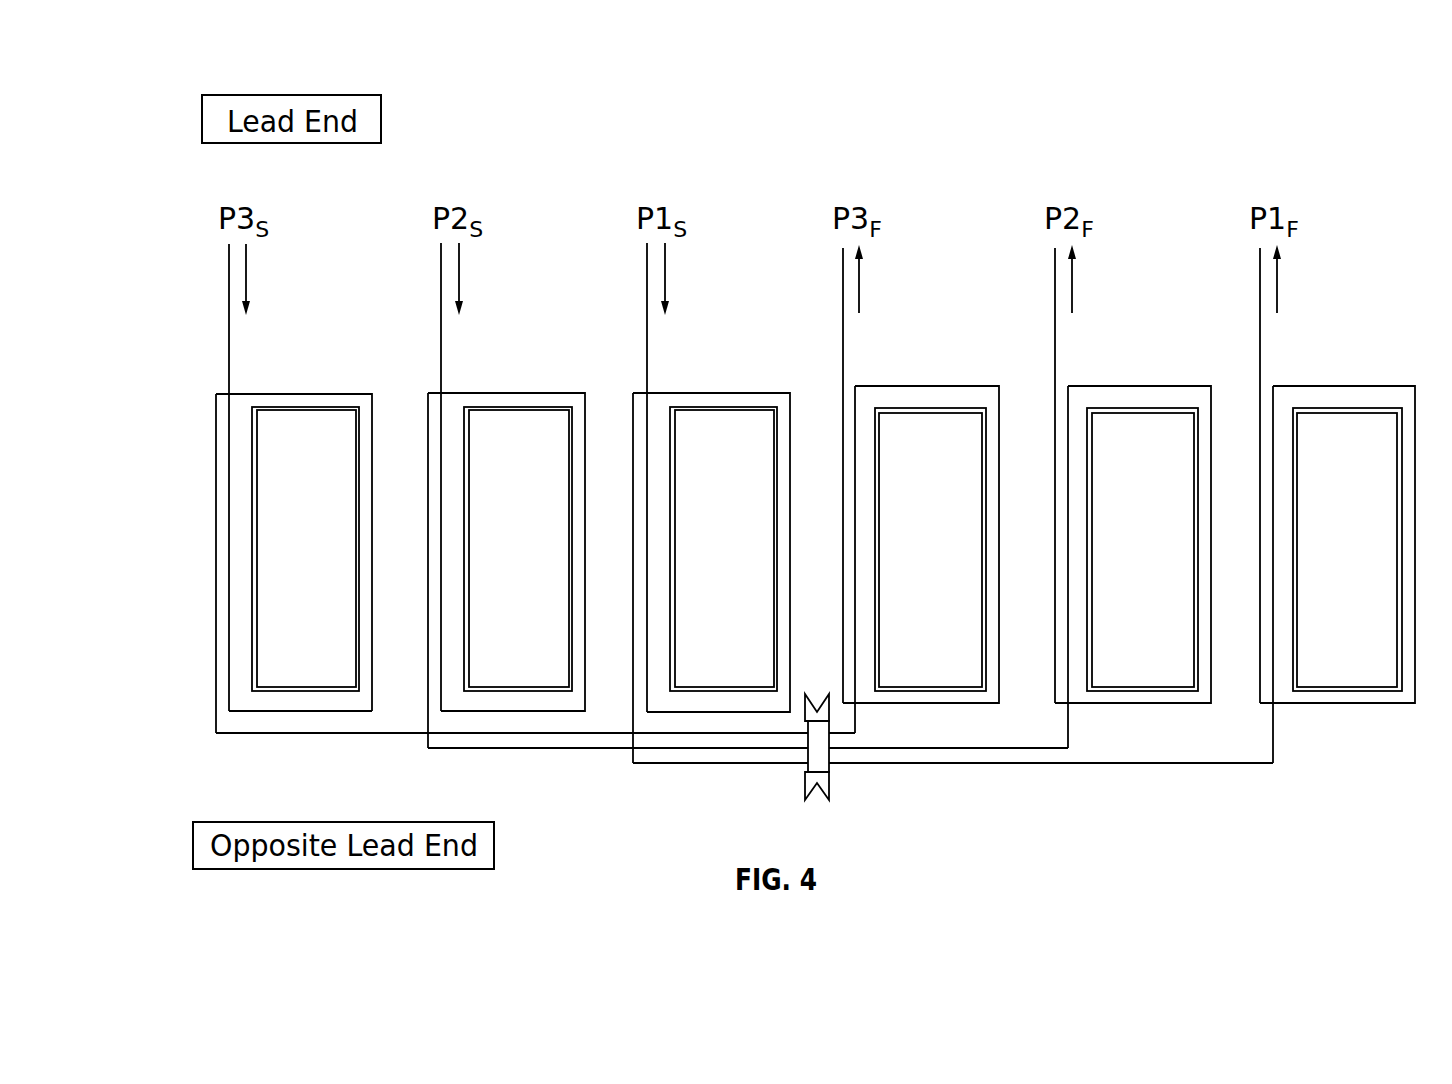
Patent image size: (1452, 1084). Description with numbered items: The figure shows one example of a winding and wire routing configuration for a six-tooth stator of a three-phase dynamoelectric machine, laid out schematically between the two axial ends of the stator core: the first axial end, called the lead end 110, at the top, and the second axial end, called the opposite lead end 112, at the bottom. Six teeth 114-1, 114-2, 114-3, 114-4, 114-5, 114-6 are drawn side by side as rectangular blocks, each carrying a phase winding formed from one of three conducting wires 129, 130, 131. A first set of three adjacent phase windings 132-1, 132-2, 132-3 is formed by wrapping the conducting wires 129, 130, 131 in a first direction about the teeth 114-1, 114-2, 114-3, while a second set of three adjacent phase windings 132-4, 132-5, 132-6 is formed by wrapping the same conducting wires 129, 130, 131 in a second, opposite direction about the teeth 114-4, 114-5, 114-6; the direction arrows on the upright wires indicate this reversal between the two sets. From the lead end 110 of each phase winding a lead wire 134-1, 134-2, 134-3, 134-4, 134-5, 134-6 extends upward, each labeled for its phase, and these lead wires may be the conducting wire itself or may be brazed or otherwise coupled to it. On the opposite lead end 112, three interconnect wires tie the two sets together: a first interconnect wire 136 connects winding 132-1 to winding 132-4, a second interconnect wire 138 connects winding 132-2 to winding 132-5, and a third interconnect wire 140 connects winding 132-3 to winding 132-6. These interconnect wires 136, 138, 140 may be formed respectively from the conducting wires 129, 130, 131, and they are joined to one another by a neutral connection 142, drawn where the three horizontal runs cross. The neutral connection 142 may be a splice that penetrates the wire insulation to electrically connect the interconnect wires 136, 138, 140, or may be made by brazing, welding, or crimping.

The lead end 110 is at (227, 393).
The opposite lead end 112 is at (217, 752).
The tooth 114-1 is at (273, 562).
The tooth 114-2 is at (486, 562).
The tooth 114-3 is at (691, 562).
The tooth 114-4 is at (898, 562).
The tooth 114-5 is at (1110, 562).
The tooth 114-6 is at (1315, 562).
The conducting wire 129 is at (229, 332).
The conducting wire 130 is at (441, 372).
The conducting wire 131 is at (647, 370).
The phase winding 132-1 is at (310, 382).
The phase winding 132-2 is at (525, 381).
The phase winding 132-3 is at (710, 381).
The phase winding 132-4 is at (925, 374).
The phase winding 132-5 is at (1138, 374).
The phase winding 132-6 is at (1340, 374).
The lead wire 134-1 is at (229, 270).
The lead wire 134-2 is at (441, 282).
The lead wire 134-3 is at (647, 270).
The lead wire 134-4 is at (843, 270).
The lead wire 134-5 is at (1055, 270).
The lead wire 134-6 is at (1260, 270).
The first interconnect wire 136 is at (273, 735).
The second interconnect wire 138 is at (510, 750).
The third interconnect wire 140 is at (714, 765).
The neutral connection 142 is at (830, 787).